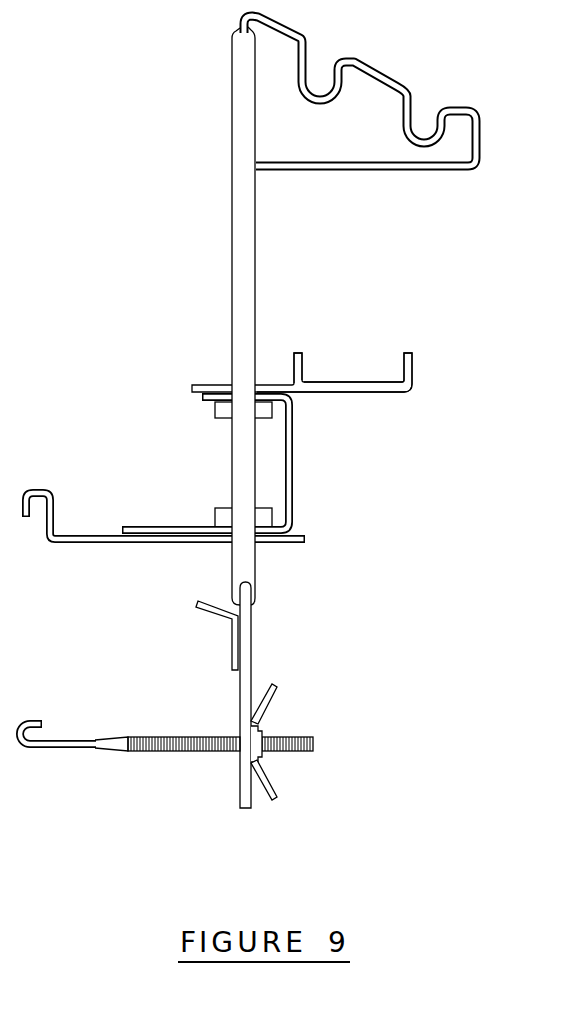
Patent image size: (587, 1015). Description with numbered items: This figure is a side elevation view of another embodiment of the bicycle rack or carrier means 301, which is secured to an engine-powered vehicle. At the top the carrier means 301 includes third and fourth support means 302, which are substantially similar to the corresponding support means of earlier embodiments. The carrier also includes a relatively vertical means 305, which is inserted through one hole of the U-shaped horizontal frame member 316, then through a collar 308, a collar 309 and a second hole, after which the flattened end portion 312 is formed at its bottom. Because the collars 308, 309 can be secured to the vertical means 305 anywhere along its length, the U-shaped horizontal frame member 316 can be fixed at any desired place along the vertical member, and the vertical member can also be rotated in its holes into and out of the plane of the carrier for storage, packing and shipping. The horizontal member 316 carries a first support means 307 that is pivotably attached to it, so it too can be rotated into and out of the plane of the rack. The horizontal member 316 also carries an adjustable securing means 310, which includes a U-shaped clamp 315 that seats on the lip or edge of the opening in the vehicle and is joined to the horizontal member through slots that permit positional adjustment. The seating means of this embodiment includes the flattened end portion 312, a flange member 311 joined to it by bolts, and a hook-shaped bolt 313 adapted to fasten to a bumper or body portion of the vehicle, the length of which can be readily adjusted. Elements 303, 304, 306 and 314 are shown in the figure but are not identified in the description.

The bicycle rack or carrier means 301 is at (295, 310).
The third and fourth support means 302 is at (352, 185).
The lower fastening assembly 303 is at (219, 703).
The clamp assembly 304 is at (267, 454).
The vertical means 305 is at (232, 270).
The bracket end tab 306 is at (412, 353).
The first support means 307 is at (298, 353).
The collar 308 is at (215, 409).
The collar 309 is at (223, 508).
The securing means 310 is at (78, 545).
The flange member 311 is at (207, 613).
The flattened end portion 312 is at (252, 630).
The hook-shaped bolt 313 is at (147, 753).
The spring clip 314 is at (277, 798).
The U-shaped clamp 315 is at (42, 490).
The U-shaped horizontal frame member 316 is at (293, 437).